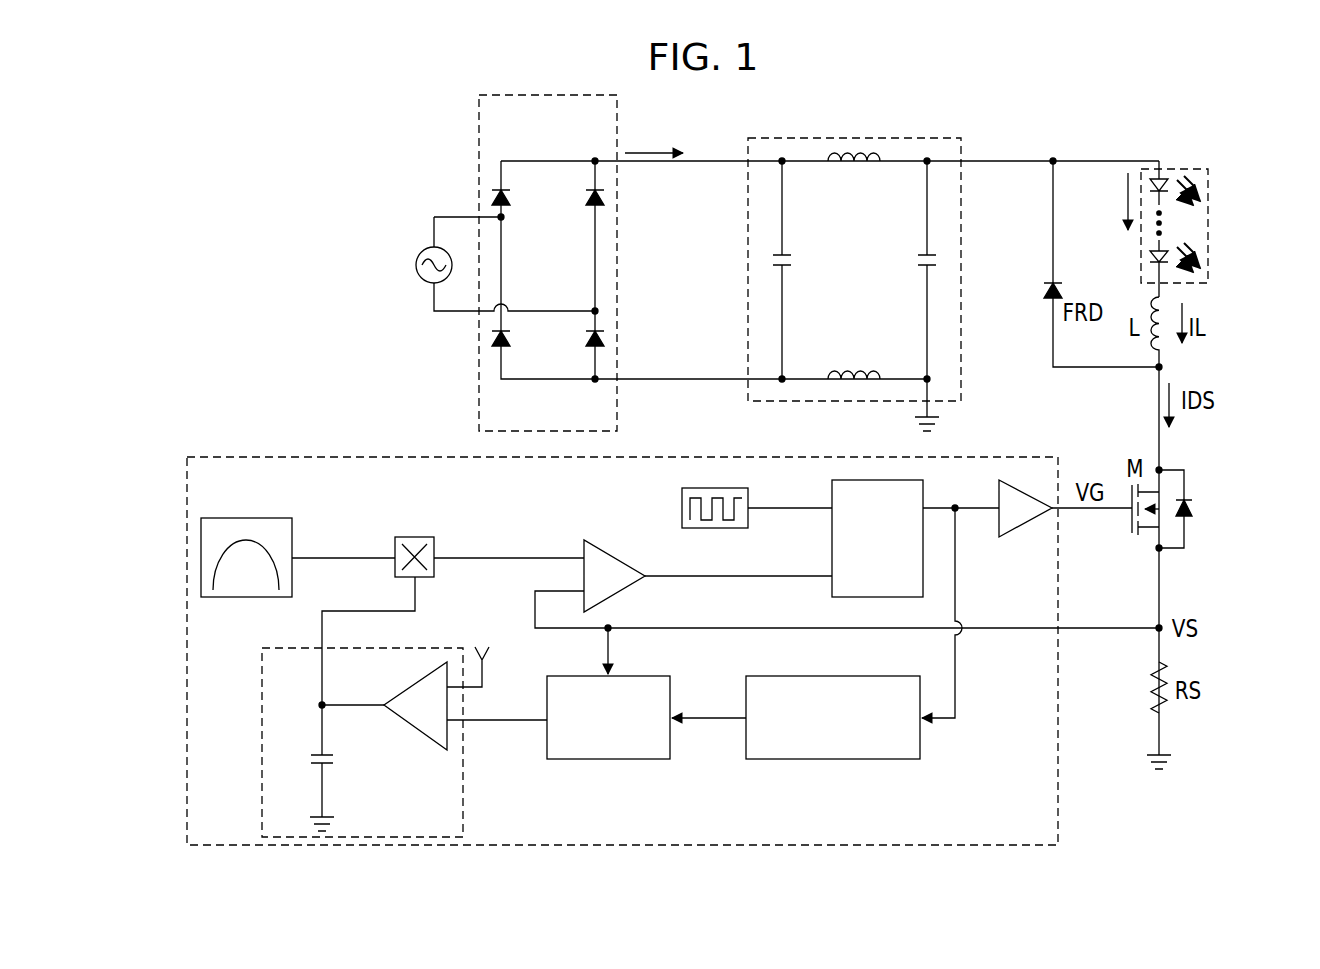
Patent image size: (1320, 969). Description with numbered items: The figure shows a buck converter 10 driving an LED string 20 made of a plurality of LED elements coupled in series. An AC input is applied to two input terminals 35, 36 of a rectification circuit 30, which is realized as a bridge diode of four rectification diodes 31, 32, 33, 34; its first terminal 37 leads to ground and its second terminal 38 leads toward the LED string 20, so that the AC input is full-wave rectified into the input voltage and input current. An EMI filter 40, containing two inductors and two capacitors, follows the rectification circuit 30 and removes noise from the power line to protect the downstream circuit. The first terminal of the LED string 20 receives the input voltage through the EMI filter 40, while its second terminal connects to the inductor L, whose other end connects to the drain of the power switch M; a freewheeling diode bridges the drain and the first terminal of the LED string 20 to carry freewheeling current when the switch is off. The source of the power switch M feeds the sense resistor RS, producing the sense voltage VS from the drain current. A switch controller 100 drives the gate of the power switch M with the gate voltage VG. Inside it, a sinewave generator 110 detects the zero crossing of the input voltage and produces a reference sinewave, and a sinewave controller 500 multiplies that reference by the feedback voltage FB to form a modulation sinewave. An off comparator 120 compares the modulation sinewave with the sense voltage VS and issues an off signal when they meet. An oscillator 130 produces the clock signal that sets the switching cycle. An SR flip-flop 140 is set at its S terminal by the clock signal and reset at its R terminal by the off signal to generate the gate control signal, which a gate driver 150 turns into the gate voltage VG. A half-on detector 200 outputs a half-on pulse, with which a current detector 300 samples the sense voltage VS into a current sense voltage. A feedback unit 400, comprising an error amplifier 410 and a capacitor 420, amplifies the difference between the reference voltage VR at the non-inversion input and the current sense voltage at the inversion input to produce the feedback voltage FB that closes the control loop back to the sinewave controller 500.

The buck converter 10 is at (1103, 130).
The LED string 20 is at (1192, 168).
The rectification circuit 30 is at (479, 120).
The rectification diode 31 is at (516, 192).
The rectification diode 32 is at (516, 350).
The rectification diode 33 is at (583, 214).
The rectification diode 34 is at (586, 333).
The input terminal 35 is at (501, 217).
The input terminal 36 is at (595, 311).
The first terminal 37 is at (595, 379).
The second terminal 38 is at (595, 161).
The EMI filter 40 is at (926, 138).
The switch controller 100 is at (338, 457).
The sinewave generator 110 is at (222, 597).
The off comparator 120 is at (612, 545).
The oscillator 130 is at (728, 488).
The SR flip-flop 140 is at (857, 480).
The gate driver 150 is at (1022, 480).
The half-on detector 200 is at (887, 759).
The current detector 300 is at (643, 759).
The feedback unit 400 is at (463, 803).
The error amplifier 410 is at (418, 735).
The capacitor 420 is at (301, 788).
The sinewave controller 500 is at (415, 537).